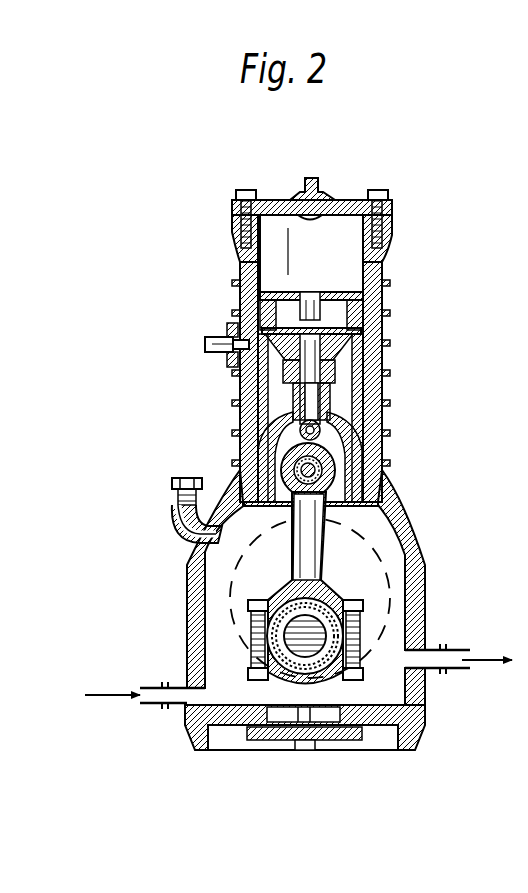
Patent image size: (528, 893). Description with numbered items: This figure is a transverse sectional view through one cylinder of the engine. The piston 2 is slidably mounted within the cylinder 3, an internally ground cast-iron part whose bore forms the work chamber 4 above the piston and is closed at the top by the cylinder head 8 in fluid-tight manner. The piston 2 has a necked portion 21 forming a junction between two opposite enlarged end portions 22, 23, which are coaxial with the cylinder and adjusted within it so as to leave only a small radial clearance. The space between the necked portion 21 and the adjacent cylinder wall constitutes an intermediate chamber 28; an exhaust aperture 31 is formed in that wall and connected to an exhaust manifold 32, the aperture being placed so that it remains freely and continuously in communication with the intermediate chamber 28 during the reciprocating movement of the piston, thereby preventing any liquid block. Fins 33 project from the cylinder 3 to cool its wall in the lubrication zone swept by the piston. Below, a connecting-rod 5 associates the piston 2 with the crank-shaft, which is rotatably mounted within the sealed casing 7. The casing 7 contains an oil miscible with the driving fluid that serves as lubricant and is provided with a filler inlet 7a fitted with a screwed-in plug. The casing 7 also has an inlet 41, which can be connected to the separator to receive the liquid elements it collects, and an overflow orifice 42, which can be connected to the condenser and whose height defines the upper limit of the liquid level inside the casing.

The piston 2 is at (355, 508).
The cylinder 3 is at (384, 267).
The work chamber 4 is at (277, 228).
The connecting-rod 5 is at (291, 560).
The casing 7 is at (407, 515).
The filler inlet 7a is at (174, 480).
The cylinder head 8 is at (346, 207).
The necked portion 21 is at (340, 378).
The enlarged end portion 22 is at (353, 345).
The enlarged end portion 23 is at (350, 428).
The intermediate chamber 28 is at (348, 398).
The exhaust aperture 31 is at (228, 349).
The exhaust manifold 32 is at (225, 337).
The fins 33 is at (386, 302).
The inlet 41 is at (222, 690).
The overflow orifice 42 is at (395, 652).